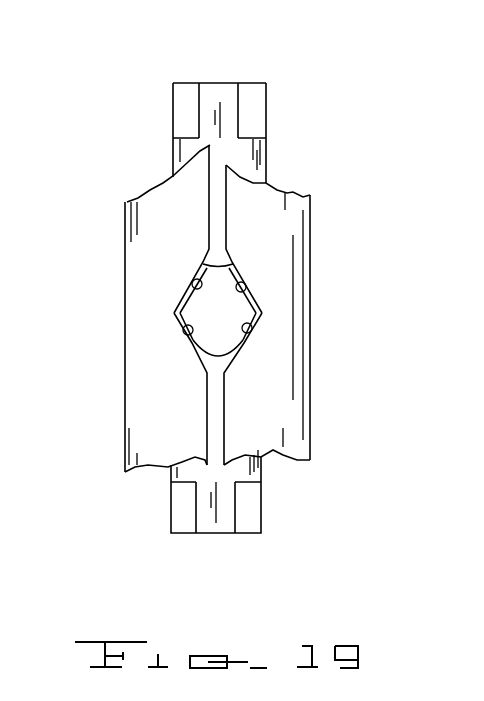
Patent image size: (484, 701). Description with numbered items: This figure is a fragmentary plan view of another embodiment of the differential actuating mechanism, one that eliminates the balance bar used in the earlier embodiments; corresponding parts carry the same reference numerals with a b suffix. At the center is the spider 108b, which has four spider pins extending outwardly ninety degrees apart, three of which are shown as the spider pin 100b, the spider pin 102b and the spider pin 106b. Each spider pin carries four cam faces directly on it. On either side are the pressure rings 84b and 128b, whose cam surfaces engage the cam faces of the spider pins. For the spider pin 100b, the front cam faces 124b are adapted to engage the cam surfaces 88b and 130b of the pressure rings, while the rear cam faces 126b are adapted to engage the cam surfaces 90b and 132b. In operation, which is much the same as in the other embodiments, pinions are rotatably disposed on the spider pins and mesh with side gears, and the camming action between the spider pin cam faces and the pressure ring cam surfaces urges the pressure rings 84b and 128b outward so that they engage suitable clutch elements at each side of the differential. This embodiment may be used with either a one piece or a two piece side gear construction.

The pressure ring 84b is at (125, 325).
The cam surface 88b is at (198, 279).
The cam surface 90b is at (189, 337).
The spider pin 100b is at (235, 318).
The spider pin 102b is at (236, 83).
The spider pin 106b is at (223, 533).
The spider 108b is at (266, 151).
The front cam faces 124b is at (190, 288).
The rear cam faces 126b is at (192, 346).
The pressure ring 128b is at (310, 273).
The cam surface 130b is at (243, 292).
The cam surface 132b is at (250, 337).